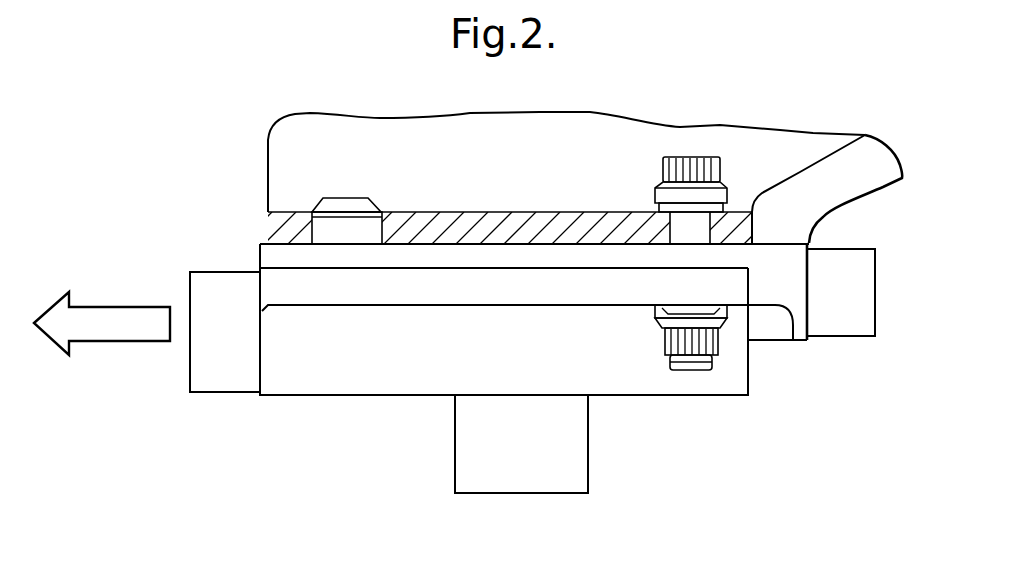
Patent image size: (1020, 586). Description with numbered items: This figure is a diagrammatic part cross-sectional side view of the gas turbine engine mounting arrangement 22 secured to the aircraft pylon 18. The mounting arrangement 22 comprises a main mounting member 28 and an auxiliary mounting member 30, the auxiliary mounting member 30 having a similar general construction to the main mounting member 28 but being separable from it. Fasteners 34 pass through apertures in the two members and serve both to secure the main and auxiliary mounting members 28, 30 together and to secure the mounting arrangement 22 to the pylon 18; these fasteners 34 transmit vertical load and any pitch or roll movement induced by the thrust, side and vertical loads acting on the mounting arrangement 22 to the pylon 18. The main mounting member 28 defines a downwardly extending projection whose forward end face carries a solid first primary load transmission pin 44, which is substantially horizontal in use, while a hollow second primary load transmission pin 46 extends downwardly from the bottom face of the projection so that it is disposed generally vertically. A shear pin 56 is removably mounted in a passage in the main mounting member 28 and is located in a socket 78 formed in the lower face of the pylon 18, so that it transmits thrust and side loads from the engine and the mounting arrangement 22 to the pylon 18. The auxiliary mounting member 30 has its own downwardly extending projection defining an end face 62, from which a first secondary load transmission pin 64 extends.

The aircraft pylon 18 is at (815, 180).
The mounting arrangement 22 is at (494, 390).
The main mounting member 28 is at (434, 296).
The auxiliary mounting member 30 is at (577, 265).
The fasteners 34 is at (695, 165).
The first primary load transmission pin 44 is at (200, 372).
The second primary load transmission pin 46 is at (535, 486).
The shear pin 56 is at (353, 227).
The end face 62 is at (810, 341).
The first secondary load transmission pin 64 is at (860, 297).
The socket 78 is at (385, 226).